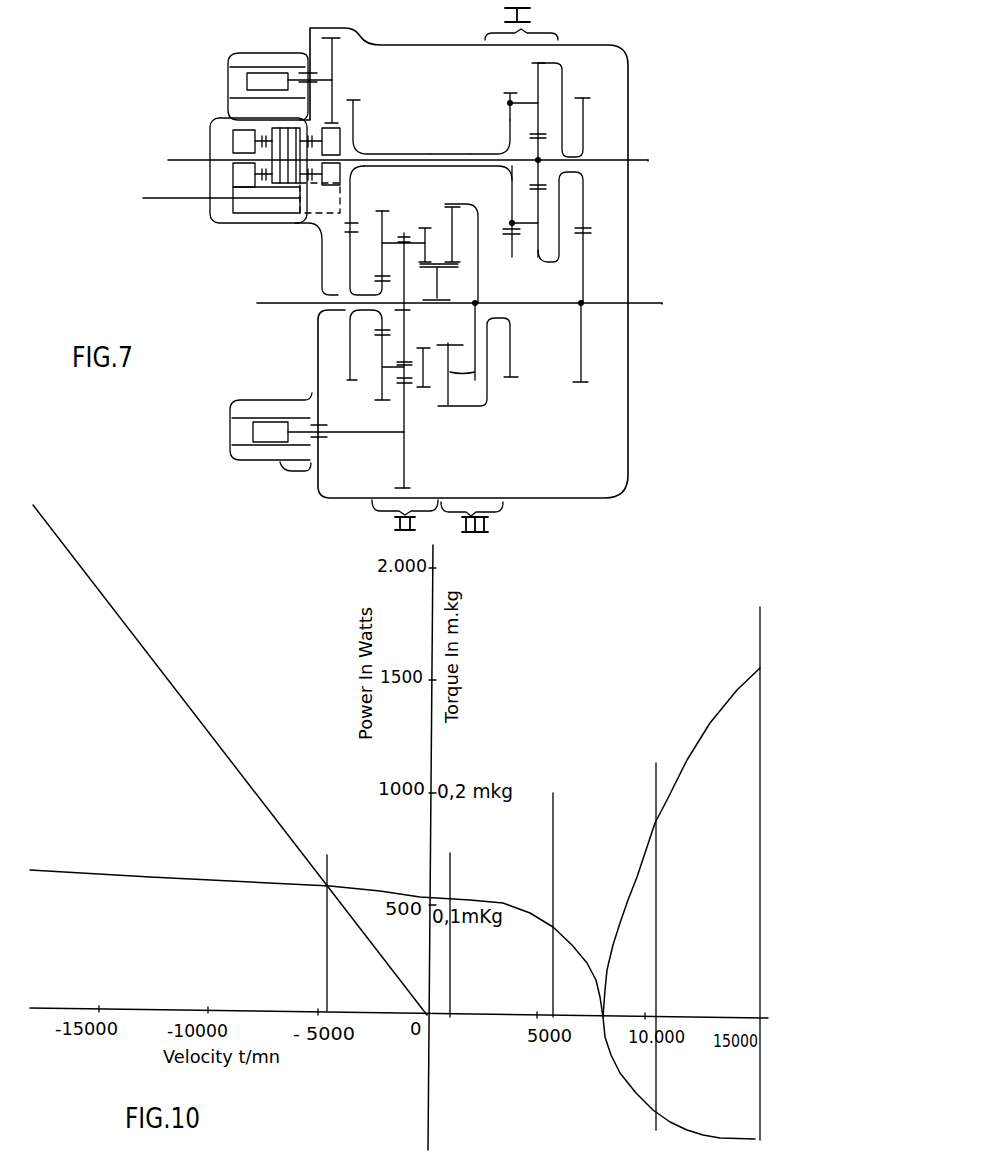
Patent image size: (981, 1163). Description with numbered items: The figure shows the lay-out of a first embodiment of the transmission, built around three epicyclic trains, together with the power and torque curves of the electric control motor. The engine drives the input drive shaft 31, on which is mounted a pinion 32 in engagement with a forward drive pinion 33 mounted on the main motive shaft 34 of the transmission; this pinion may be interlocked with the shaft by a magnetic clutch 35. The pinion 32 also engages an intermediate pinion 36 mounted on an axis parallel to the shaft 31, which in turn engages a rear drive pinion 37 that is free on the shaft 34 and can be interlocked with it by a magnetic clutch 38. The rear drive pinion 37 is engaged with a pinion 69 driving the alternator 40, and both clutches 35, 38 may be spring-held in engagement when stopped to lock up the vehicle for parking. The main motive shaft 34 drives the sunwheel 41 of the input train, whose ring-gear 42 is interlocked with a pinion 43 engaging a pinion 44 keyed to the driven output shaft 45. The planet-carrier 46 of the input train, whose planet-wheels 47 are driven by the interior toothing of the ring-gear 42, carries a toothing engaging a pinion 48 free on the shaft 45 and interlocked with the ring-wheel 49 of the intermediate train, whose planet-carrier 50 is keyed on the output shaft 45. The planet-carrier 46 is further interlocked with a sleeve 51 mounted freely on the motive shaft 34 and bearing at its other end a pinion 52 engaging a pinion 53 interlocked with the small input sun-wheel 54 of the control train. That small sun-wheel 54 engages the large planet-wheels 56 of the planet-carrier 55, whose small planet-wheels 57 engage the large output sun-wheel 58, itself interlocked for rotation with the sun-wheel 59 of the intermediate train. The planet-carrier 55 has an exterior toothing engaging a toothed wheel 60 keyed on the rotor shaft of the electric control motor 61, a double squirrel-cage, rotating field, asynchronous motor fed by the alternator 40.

The input drive shaft 31 is at (175, 200).
The pinion 32 is at (247, 210).
The forward drive pinion 33 is at (237, 140).
The main motive shaft 34 is at (399, 154).
The magnetic clutch 35 is at (250, 120).
The intermediate pinion 36 is at (316, 212).
The rear drive pinion 37 is at (340, 141).
The magnetic clutch 38 is at (297, 177).
The alternator 40 is at (266, 53).
The sunwheel 41 is at (512, 150).
The ring-gear 42 is at (564, 72).
The pinion 43 is at (584, 120).
The pinion 44 is at (587, 278).
The driven output shaft 45 is at (652, 308).
The planet-carrier 46 is at (506, 103).
The planet-wheels 47 is at (536, 86).
The pinion 48 is at (512, 352).
The ring-wheel 49 is at (470, 408).
The planet-carrier 50 is at (449, 375).
The sleeve 51 is at (434, 150).
The pinion 52 is at (358, 114).
The pinion 53 is at (350, 267).
The small input sun-wheel 54 is at (379, 322).
The planet-carrier 55 is at (407, 348).
The large planet-wheels 56 is at (383, 222).
The small planet-wheels 57 is at (426, 232).
The large output sun-wheel 58 is at (405, 268).
The sun-wheel 59 is at (441, 282).
The toothed wheel 60 is at (406, 462).
The electric control motor 61 is at (290, 466).
The pinion 69 is at (334, 62).